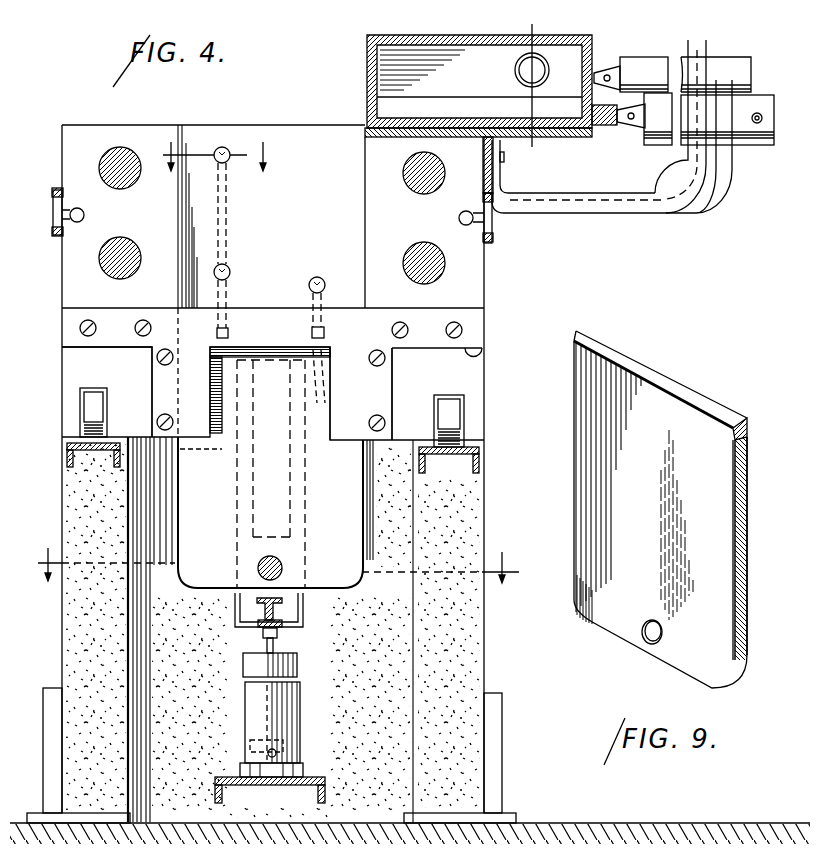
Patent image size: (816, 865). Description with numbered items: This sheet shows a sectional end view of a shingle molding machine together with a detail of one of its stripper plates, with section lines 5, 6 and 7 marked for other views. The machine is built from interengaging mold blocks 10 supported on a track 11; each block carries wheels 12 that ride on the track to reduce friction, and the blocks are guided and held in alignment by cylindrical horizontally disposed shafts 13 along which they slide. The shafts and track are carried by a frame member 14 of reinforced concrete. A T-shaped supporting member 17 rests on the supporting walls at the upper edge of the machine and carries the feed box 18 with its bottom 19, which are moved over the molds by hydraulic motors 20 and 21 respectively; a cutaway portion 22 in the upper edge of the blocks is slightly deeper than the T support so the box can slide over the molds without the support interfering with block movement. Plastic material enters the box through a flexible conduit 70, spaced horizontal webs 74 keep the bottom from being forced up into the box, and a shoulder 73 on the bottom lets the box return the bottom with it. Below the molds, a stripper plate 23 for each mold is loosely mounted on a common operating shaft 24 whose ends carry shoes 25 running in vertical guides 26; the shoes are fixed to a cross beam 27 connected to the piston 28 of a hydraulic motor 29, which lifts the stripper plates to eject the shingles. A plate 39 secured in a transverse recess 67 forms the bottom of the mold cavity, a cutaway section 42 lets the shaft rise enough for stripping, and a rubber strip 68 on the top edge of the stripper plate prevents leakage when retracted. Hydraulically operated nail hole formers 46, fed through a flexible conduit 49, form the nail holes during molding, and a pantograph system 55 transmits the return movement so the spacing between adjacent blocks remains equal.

In FIG. 4, the section line 5- 5 is at (276, 567).
In FIG. 4, the section line 6- 6 is at (217, 156).
In FIG. 4, the section line 7- 7 is at (542, 86).
In FIG. 4, the mold block 10 is at (489, 288).
In FIG. 4, the track 11 is at (97, 453).
In FIG. 4, the wheels 12 is at (88, 400).
In FIG. 4, the cylindrical horizontally disposed shafts 13 is at (122, 250).
In FIG. 4, the frame member 14 is at (469, 650).
In FIG. 4, the T-shaped supporting member 17 is at (516, 140).
In FIG. 4, the feed box 18 is at (437, 38).
In FIG. 4, the bottom 19 is at (477, 118).
In FIG. 4, the hydraulic motor 20 is at (734, 60).
In FIG. 4, the hydraulic motor 21 is at (750, 147).
In FIG. 4, the cutaway portion 22 is at (365, 130).
In FIG. 4, the stripper plate 23 is at (352, 528).
In FIG. 9, the stripper plate 23 is at (724, 498).
In FIG. 4, the operating shaft 24 is at (258, 566).
In FIG. 4, the shoe 25 is at (247, 608).
In FIG. 4, the vertical guides 26 is at (298, 478).
In FIG. 4, the cross beam 27 is at (272, 607).
In FIG. 4, the piston 28 is at (304, 722).
In FIG. 4, the hydraulic motor 29 is at (248, 725).
In FIG. 4, the plate 39 is at (107, 333).
In FIG. 4, the cutaway section 42 is at (332, 393).
In FIG. 4, the nail hole formers 46 is at (228, 142).
In FIG. 4, the flexible conduit 49 is at (309, 331).
In FIG. 4, the pantograph system 55 is at (52, 213).
In FIG. 4, the transverse recess 67 is at (482, 353).
In FIG. 9, the strip 68 is at (714, 403).
In FIG. 4, the conduit 70 is at (549, 72).
In FIG. 4, the shoulder 73 is at (601, 118).
In FIG. 4, the horizontal webs 74 is at (432, 105).